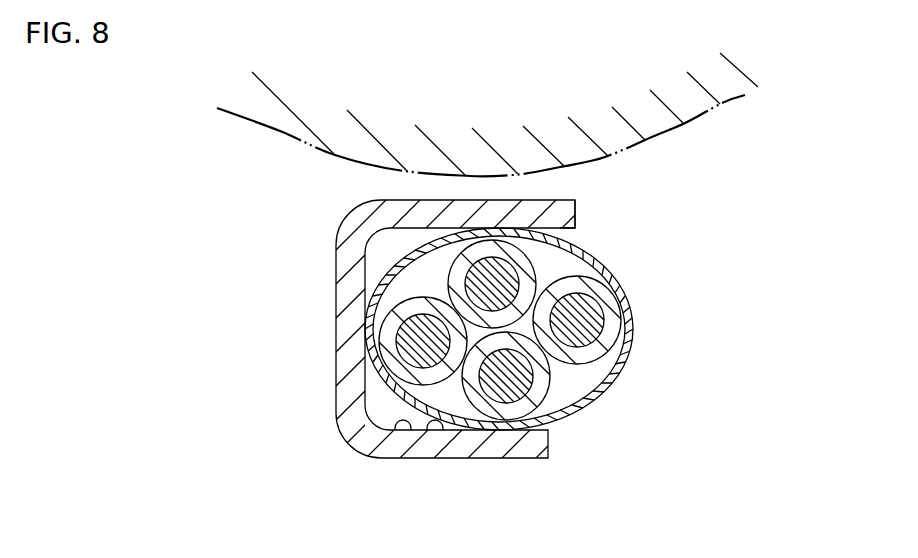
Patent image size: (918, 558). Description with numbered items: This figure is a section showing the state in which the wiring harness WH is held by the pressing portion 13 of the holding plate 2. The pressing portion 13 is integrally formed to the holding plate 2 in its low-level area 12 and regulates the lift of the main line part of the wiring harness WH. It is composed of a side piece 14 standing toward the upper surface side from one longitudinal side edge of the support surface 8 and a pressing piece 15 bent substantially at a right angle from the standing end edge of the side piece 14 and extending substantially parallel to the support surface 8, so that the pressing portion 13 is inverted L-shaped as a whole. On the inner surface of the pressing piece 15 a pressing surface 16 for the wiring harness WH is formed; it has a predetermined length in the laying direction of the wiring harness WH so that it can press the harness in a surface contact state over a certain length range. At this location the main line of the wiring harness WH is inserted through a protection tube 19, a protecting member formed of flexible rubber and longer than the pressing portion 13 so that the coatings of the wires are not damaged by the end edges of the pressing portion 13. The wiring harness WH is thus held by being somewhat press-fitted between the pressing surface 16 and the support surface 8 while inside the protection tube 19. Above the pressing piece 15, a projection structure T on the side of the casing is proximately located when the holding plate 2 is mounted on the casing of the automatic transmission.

The projection structure T is at (745, 95).
The pressing portion 13 is at (315, 262).
The side piece 14 is at (348, 334).
The pressing piece 15 is at (547, 201).
The pressing surface 16 is at (573, 229).
The holding plate 2 is at (546, 467).
The support surface 8 is at (412, 425).
The low-level area 12 is at (443, 425).
The protection tube 19 is at (590, 402).
The wiring harness WH is at (583, 268).